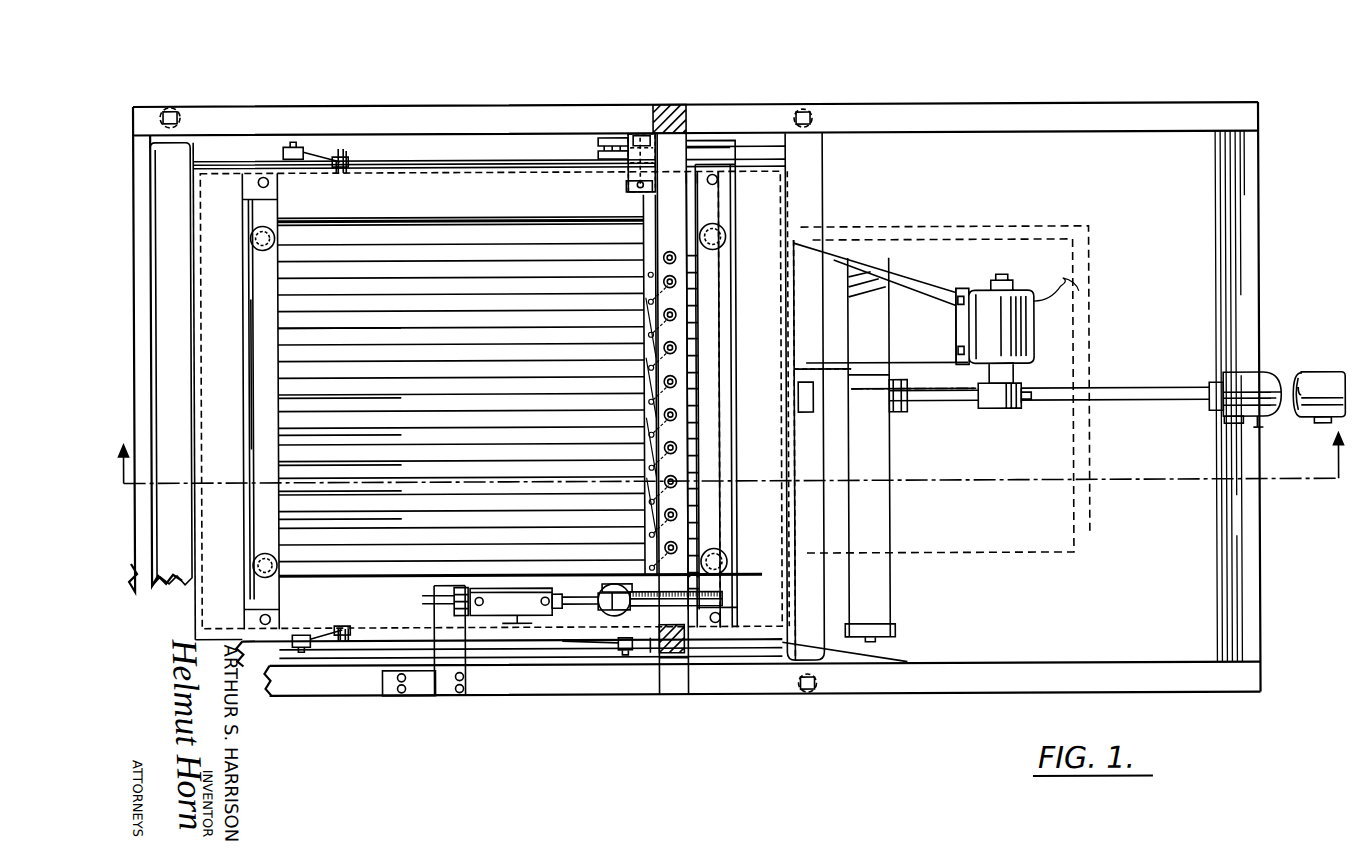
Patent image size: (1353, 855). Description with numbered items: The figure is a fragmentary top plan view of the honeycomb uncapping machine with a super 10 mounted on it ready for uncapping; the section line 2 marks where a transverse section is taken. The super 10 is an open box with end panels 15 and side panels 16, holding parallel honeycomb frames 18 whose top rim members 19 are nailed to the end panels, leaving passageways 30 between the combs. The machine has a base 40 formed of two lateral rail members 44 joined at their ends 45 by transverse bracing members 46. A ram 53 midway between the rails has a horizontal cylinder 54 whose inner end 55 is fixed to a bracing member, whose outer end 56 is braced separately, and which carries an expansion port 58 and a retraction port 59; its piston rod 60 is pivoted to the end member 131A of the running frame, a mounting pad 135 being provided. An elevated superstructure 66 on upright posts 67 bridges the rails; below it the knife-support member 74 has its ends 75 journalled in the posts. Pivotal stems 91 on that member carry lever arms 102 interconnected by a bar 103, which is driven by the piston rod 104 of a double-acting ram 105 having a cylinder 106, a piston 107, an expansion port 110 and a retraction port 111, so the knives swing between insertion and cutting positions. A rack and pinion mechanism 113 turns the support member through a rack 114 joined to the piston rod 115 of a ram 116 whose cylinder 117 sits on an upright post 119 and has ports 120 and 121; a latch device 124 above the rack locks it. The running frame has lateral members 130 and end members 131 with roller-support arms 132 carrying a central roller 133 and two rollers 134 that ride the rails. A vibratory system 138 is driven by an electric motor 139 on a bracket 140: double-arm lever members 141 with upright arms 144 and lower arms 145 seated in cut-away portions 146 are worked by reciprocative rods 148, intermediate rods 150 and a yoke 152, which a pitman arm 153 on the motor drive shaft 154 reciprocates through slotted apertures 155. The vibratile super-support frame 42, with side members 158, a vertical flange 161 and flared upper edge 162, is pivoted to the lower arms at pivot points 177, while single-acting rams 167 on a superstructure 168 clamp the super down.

The section line 2- 2 is at (728, 476).
The super 10 is at (465, 240).
The end panels 15 is at (250, 366).
The side panels 16 is at (487, 240).
The honeycomb frames 18 is at (282, 467).
The top rim member 19 is at (282, 337).
The passageways 30 is at (282, 521).
The base 40 is at (726, 391).
The vibratile super-support frame 42 is at (191, 641).
The lateral rail members 44 is at (1022, 104).
The ends 45 is at (134, 107).
The transverse bracing members 46 is at (1250, 243).
The ram 53 is at (1273, 372).
The horizontal cylinder 54 is at (1258, 422).
The inner end 55 is at (1228, 377).
The outer end 56 is at (1337, 378).
The expansion port 58 is at (1325, 428).
The retraction port 59 is at (1226, 432).
The piston rod 60 is at (1132, 392).
The superstructure 66 is at (692, 98).
The upright posts 67 is at (680, 106).
The knife-support member 74 is at (673, 160).
The opposite ends 75 is at (666, 135).
The pivotal stems 91 is at (675, 316).
The lever arms 102 is at (655, 368).
The bar 103 is at (655, 380).
The piston rod 104 is at (640, 205).
The double-acting ram 105 is at (647, 135).
The cylinder 106 is at (640, 135).
The piston 107 is at (626, 185).
The expansion port 110 is at (628, 142).
The retraction port 111 is at (626, 186).
The rack and pinion mechanism 113 is at (684, 652).
The rack 114 is at (722, 605).
The piston rod 115 is at (578, 610).
The double-acting ram 116 is at (511, 620).
The cylinder 117 is at (487, 601).
The upright post 119 is at (445, 698).
The expansion port 120 is at (459, 697).
The retraction port 121 is at (541, 606).
The latch device 124 is at (612, 586).
The lateral members 130 is at (493, 160).
The end members 131 is at (162, 308).
The end member 131A is at (812, 593).
The roller-support arms 132 is at (190, 138).
The central roller 133 is at (176, 108).
The rollers 134 is at (162, 108).
The mounting pad 135 is at (800, 420).
The vibratory system 138 is at (1000, 415).
The electric motor 139 is at (1025, 292).
The bracket 140 is at (925, 283).
The double-arm lever members 141 is at (333, 160).
The upright arm 144 is at (292, 150).
The lower arm 145 is at (336, 160).
The cut-away portion 146 is at (342, 160).
The reciprocative rods 148 is at (437, 162).
The intermediate rods 150 is at (752, 150).
The yoke 152 is at (878, 503).
The pitman arm 153 is at (948, 400).
The motor drive shaft 154 is at (1024, 405).
The slotted apertures 155 is at (906, 234).
The side members 158 is at (405, 168).
The vertical flange 161 is at (398, 235).
The upper edge 162 is at (330, 222).
The single-acting rams 167 is at (254, 248).
The superstructure 168 is at (245, 383).
The pivot points 177 is at (346, 160).